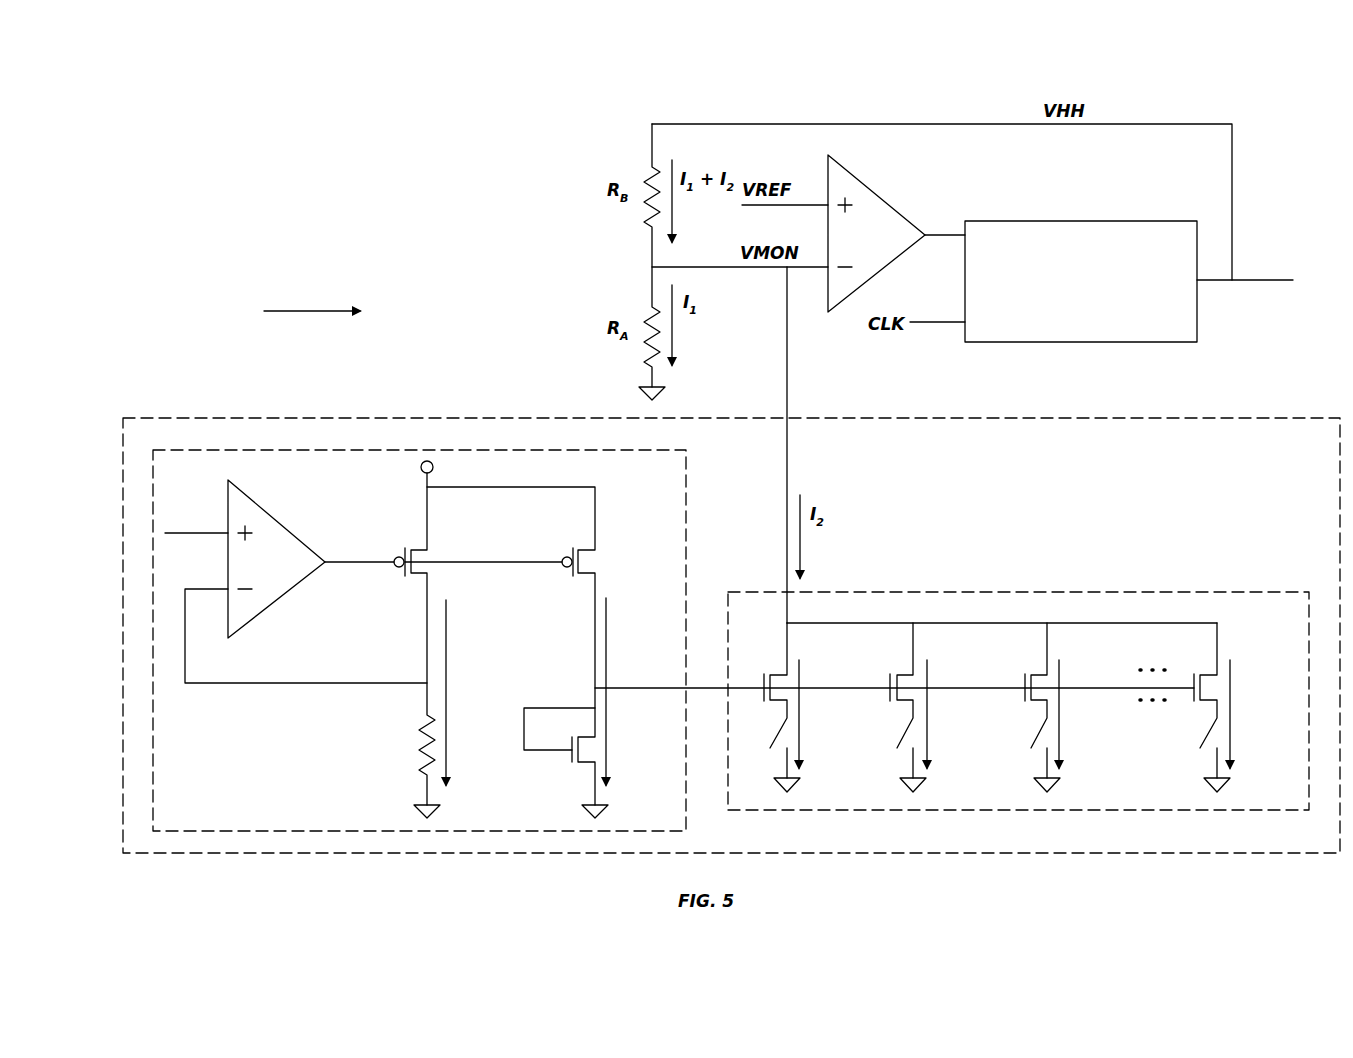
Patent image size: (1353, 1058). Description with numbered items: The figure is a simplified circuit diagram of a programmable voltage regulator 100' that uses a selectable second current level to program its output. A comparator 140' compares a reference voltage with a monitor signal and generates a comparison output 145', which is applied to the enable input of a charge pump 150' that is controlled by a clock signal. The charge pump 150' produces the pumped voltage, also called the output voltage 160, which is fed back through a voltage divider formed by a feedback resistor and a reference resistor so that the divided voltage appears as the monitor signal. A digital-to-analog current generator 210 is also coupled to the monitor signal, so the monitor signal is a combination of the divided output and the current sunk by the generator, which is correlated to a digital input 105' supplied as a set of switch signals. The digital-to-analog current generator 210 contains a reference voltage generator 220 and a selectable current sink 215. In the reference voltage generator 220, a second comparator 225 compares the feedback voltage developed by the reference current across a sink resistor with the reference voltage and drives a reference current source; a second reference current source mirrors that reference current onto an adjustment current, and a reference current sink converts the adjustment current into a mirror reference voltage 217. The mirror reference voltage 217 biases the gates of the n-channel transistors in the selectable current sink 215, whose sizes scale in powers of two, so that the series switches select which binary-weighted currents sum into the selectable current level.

The programmable voltage regulator 100' is at (444, 127).
The digital input 105' is at (330, 328).
The comparator 140' is at (883, 233).
The comparison output 145' is at (964, 203).
The charge pump 150' is at (1081, 262).
The output voltage 160 is at (1262, 280).
The digital-to-analog current generator 210 is at (1115, 418).
The selectable current sink 215 is at (1082, 592).
The mirror reference voltage 217 is at (625, 688).
The reference voltage generator 220 is at (686, 500).
The second comparator 225 is at (280, 518).